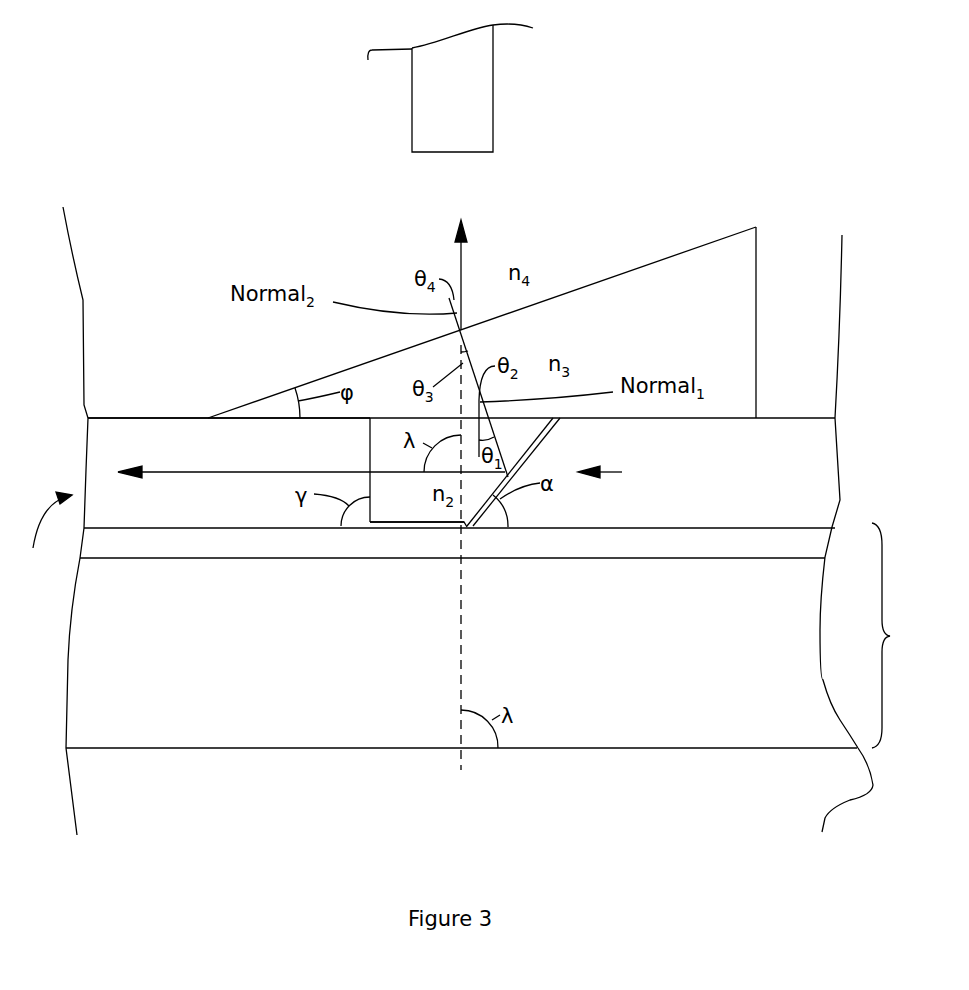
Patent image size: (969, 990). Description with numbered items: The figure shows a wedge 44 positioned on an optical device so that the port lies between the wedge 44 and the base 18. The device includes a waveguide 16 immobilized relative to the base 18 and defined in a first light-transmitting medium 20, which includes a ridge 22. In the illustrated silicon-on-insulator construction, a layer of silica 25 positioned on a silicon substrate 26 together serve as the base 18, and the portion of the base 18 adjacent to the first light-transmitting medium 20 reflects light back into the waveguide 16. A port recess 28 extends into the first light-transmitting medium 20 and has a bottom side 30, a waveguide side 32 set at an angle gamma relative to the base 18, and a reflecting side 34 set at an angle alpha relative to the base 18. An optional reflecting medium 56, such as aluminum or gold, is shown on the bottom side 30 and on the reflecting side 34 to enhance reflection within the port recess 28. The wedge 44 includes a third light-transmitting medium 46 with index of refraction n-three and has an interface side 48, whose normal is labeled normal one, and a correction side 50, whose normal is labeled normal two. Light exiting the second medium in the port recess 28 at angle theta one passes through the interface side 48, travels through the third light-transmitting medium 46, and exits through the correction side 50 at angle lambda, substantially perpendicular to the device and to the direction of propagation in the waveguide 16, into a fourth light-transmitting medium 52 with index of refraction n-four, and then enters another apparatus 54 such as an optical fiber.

The waveguide 16 is at (43, 536).
The base 18 is at (899, 635).
The first light-transmitting medium 20 is at (787, 438).
The ridge 22 is at (148, 418).
The layer of silica 25 is at (208, 535).
The silicon substrate 26 is at (127, 707).
The port recess 28 is at (618, 472).
The bottom side 30 is at (437, 522).
The waveguide side 32 is at (372, 425).
The reflecting side 34 is at (542, 427).
The wedge 44 is at (482, 257).
The third light-transmitting medium 46 is at (482, 296).
The interface side 48 is at (743, 417).
The correction side 50 is at (620, 277).
The fourth light-transmitting medium 52 is at (290, 195).
The apparatus 54 is at (412, 118).
The reflecting medium 56 is at (403, 530).